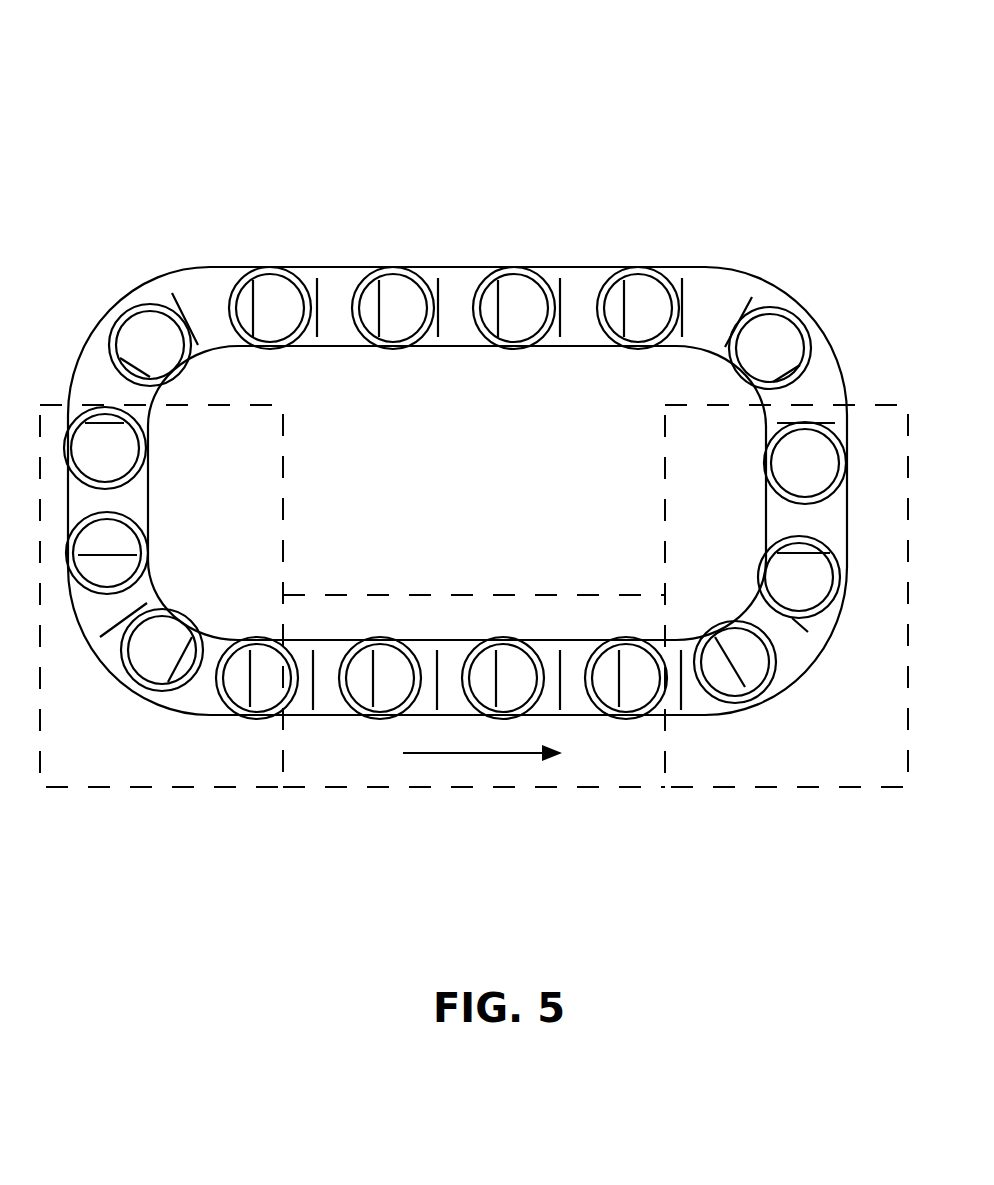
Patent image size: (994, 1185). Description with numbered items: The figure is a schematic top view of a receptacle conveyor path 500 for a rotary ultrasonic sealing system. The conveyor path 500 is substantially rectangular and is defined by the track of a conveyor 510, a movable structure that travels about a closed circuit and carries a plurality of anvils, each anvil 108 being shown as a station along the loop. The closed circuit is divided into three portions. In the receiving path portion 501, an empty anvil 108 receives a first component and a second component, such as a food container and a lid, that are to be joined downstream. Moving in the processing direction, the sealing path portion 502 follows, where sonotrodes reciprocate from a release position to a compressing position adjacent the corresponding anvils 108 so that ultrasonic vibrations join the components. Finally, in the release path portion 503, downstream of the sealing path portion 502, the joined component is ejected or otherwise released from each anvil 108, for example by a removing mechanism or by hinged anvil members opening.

The receptacle conveyor path 500 is at (212, 75).
The anvil 108 is at (228, 285).
The conveyor 510 is at (708, 287).
The receiving path portion 501 is at (138, 795).
The sealing path portion 502 is at (482, 795).
The release path portion 503 is at (831, 795).